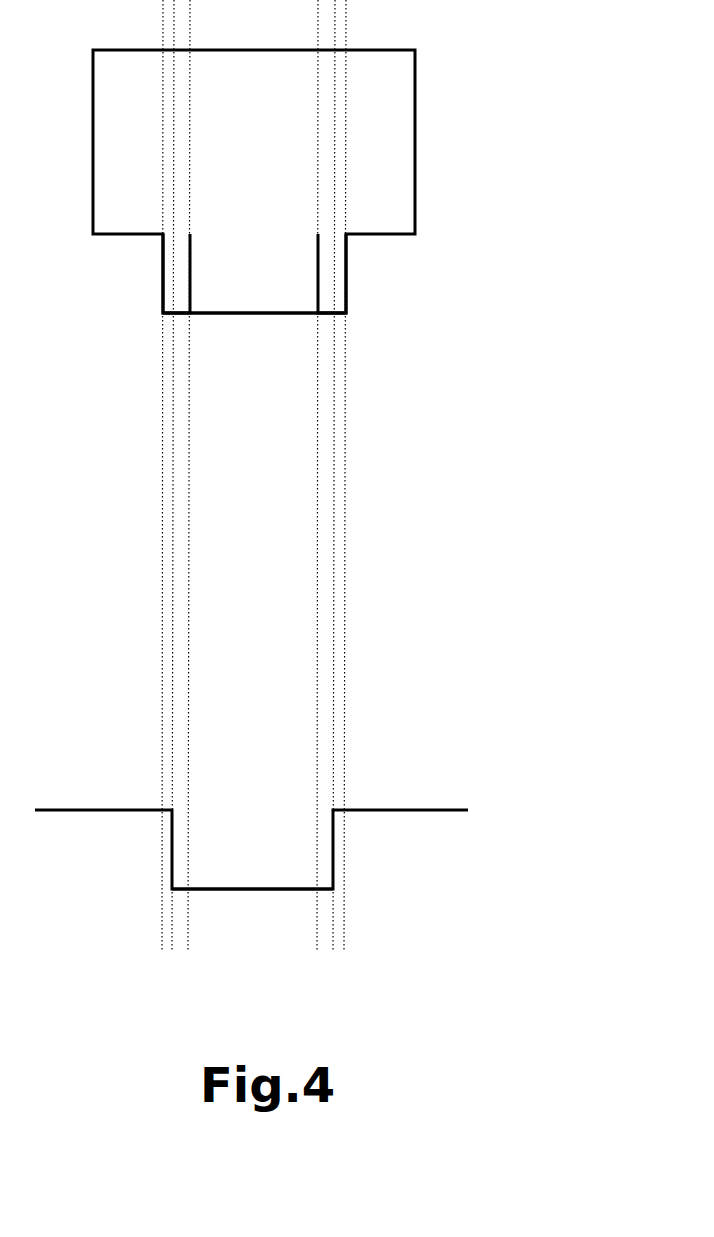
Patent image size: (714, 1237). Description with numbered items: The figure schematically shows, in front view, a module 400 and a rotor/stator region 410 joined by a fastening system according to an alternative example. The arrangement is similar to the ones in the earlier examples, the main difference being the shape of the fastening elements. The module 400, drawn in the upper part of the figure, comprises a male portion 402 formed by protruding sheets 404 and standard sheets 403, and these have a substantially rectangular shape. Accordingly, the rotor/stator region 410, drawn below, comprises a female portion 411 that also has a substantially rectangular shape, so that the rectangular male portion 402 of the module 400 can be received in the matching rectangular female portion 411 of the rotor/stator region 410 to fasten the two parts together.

The module 400 is at (470, 74).
The male portion 402 is at (253, 273).
The standard sheets 403 is at (318, 261).
The protruding sheets 404 is at (163, 297).
The rotor/stator region 410 is at (469, 857).
The female portion 411 is at (210, 863).